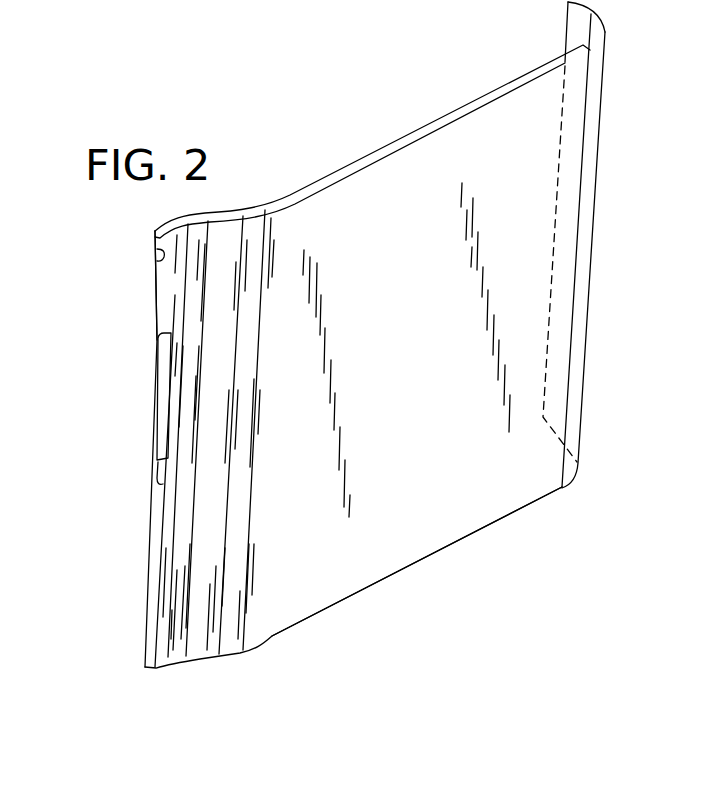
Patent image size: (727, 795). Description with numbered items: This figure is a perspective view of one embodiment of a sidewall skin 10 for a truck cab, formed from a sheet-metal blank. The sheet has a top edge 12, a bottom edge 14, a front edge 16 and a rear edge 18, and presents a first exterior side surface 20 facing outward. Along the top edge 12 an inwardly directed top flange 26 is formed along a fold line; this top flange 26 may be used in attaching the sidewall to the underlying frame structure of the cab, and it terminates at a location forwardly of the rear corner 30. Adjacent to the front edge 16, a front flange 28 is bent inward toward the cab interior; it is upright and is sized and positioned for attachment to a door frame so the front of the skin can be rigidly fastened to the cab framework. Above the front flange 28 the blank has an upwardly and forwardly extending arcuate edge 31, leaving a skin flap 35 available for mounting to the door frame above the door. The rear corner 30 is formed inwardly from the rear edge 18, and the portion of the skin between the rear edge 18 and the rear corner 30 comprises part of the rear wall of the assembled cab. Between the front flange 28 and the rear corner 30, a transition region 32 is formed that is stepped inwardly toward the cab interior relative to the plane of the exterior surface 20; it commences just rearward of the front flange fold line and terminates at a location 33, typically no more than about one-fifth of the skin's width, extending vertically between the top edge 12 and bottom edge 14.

The sidewall skin 10 is at (100, 480).
The top edge 12 is at (361, 166).
The bottom edge 14 is at (478, 530).
The front edge 16 is at (155, 510).
The rear edge 18 is at (566, 23).
The first exterior side surface 20 is at (517, 293).
The top flange 26 is at (426, 122).
The front flange 28 is at (158, 384).
The rear corner 30 is at (597, 158).
The arcuate edge 31 is at (174, 297).
The transition region 32 is at (205, 583).
The termination location of transition region 33 is at (263, 313).
The skin flap 35 is at (155, 258).